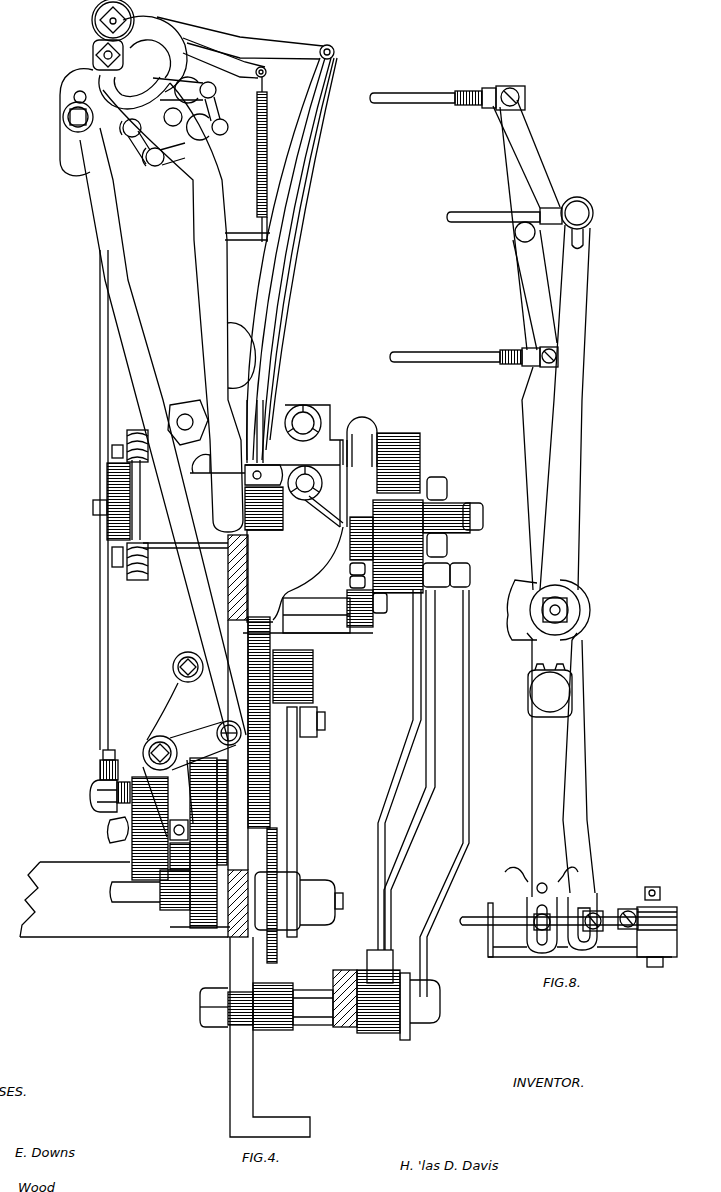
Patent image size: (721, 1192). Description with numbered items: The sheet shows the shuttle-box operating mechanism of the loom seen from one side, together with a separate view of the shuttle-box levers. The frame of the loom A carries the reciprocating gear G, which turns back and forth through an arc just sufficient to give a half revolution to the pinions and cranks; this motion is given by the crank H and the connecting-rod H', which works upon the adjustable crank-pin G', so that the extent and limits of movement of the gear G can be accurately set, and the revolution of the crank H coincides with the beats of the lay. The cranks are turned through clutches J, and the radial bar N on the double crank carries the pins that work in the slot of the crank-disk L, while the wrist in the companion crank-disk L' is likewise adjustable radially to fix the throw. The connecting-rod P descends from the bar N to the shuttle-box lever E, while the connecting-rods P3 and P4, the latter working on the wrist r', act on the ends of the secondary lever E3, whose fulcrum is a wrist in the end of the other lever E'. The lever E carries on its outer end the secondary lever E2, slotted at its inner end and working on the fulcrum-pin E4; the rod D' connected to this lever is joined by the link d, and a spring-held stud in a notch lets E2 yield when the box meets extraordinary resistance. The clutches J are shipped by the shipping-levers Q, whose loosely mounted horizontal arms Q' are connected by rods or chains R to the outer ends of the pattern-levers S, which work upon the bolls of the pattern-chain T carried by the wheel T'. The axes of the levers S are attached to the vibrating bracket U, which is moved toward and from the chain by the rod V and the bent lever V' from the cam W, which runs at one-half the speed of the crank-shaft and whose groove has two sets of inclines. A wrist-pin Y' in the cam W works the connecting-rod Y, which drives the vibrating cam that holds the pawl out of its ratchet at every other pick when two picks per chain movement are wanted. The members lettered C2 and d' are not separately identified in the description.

In FIG. 4, the pattern-lever S is at (213, 29).
In FIG. 4, the pattern-chain T is at (164, 91).
In FIG. 4, the pattern-chain wheel T' is at (209, 70).
In FIG. 4, the vibrating bracket U is at (83, 122).
In FIG. 4, the rod or chain R is at (281, 259).
In FIG. 4, the lever arm C2 is at (179, 307).
In FIG. 4, the rod V is at (163, 436).
In FIG. 4, the bent lever V' is at (189, 746).
In FIG. 4, the connecting-rod Y is at (109, 515).
In FIG. 4, the wrist-pin Y' is at (103, 796).
In FIG. 4, the cam W is at (112, 820).
In FIG. 4, the frame of the loom A is at (165, 836).
In FIG. 4, the shipping-lever Q is at (314, 451).
In FIG. 4, the horizontal arm Q' is at (225, 440).
In FIG. 4, the crank-disk L is at (264, 508).
In FIG. 4, the crank-disk L' is at (385, 503).
In FIG. 4, the radial bar N is at (453, 525).
In FIG. 4, the gear G is at (259, 722).
In FIG. 4, the adjustable crank-pin G' is at (305, 693).
In FIG. 4, the crank H is at (299, 895).
In FIG. 4, the connecting-rod H' is at (299, 822).
In FIG. 4, the connecting-rod P is at (449, 793).
In FIG. 8, the connecting-rod P is at (504, 209).
In FIG. 4, the connecting-rod P3 is at (415, 770).
In FIG. 8, the connecting-rod P3 is at (465, 349).
In FIG. 4, the connecting-rod P4 is at (394, 786).
In FIG. 8, the connecting-rod P4 is at (433, 90).
In FIG. 4, the shuttle-box lever E is at (320, 1011).
In FIG. 8, the shuttle-box lever E is at (550, 418).
In FIG. 4, the shuttle-box lever E' is at (326, 1008).
In FIG. 8, the shuttle-box lever E' is at (555, 586).
In FIG. 8, the secondary lever E2 is at (542, 796).
In FIG. 8, the secondary lever E3 is at (526, 225).
In FIG. 8, the fulcrum-pin E4 is at (550, 690).
In FIG. 8, the wrist r' is at (527, 217).
In FIG. 8, the rod D' is at (580, 926).
In FIG. 8, the clutch J is at (543, 885).
In FIG. 8, the link d is at (568, 927).
In FIG. 8, the screw d' is at (584, 917).